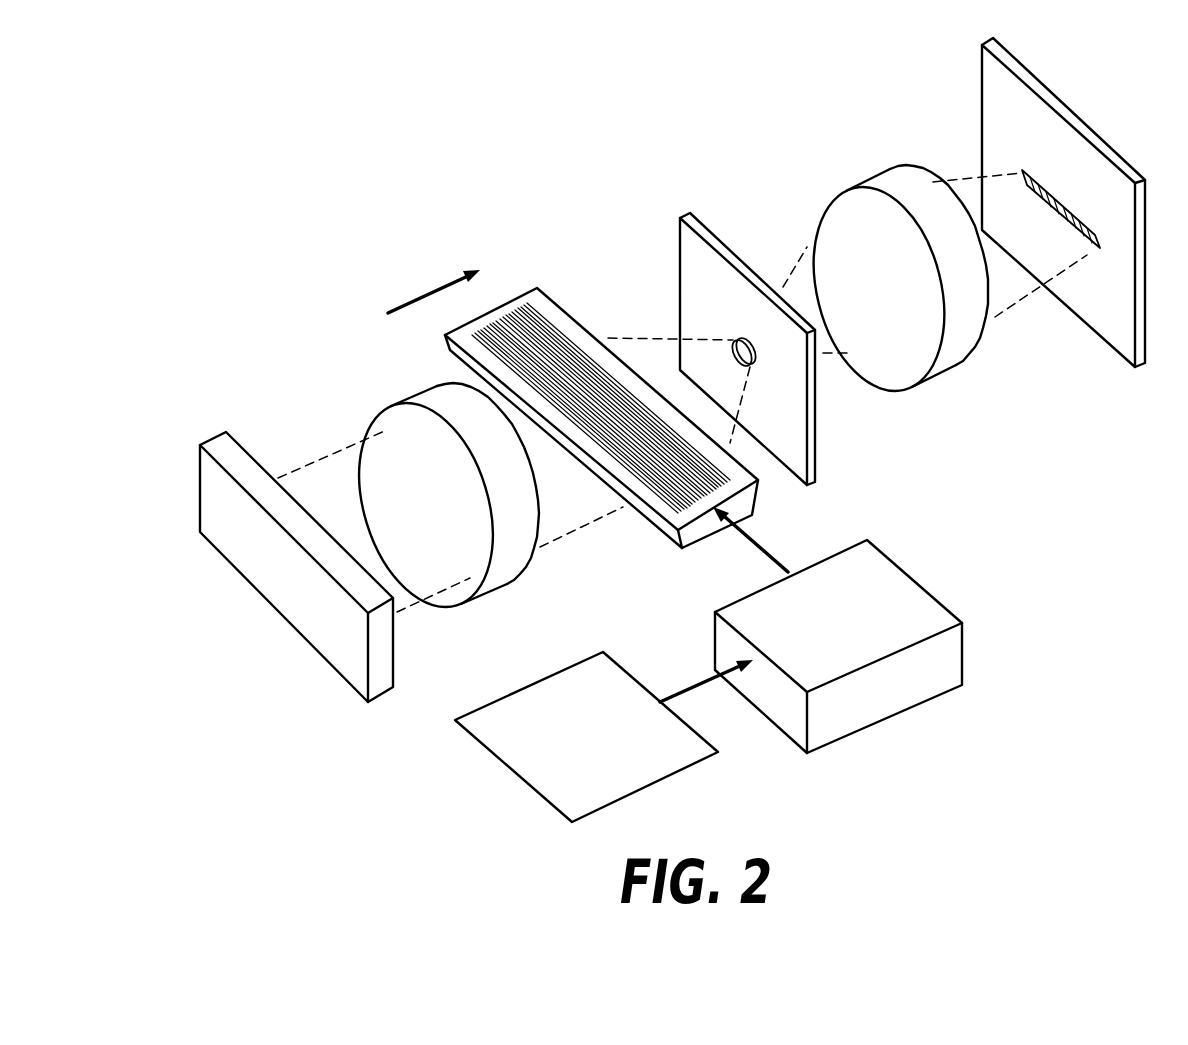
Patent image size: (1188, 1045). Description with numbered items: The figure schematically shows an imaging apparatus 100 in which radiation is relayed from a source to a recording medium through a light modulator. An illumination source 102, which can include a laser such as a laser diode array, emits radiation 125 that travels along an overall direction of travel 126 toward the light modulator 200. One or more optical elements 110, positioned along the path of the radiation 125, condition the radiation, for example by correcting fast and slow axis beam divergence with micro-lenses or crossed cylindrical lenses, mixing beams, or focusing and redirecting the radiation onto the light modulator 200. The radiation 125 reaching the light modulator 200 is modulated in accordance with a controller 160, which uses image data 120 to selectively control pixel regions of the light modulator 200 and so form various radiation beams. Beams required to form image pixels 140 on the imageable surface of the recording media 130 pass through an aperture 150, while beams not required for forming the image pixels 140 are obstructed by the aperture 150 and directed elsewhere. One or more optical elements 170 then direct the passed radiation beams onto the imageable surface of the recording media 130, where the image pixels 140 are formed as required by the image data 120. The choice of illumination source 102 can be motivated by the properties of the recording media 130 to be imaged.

The imaging apparatus 100 is at (603, 238).
The illumination source 102 is at (210, 440).
The optical elements 110 is at (432, 397).
The image data 120 is at (480, 743).
The radiation 125 is at (410, 610).
The overall direction of travel 126 is at (425, 293).
The recording media 130 is at (1113, 327).
The image pixels 140 is at (1063, 203).
The aperture 150 is at (797, 422).
The controller 160 is at (920, 583).
The optical elements 170 is at (882, 187).
The light modulator 200 is at (515, 295).